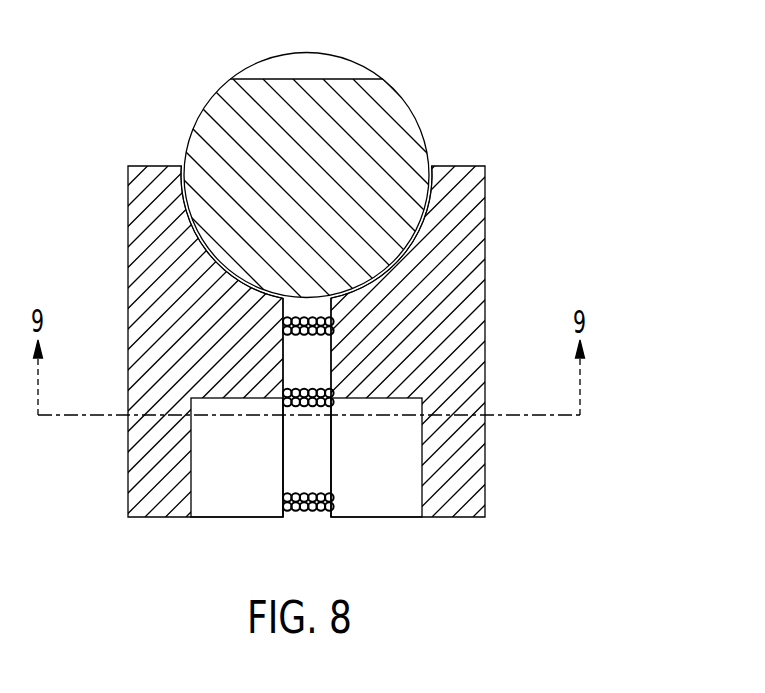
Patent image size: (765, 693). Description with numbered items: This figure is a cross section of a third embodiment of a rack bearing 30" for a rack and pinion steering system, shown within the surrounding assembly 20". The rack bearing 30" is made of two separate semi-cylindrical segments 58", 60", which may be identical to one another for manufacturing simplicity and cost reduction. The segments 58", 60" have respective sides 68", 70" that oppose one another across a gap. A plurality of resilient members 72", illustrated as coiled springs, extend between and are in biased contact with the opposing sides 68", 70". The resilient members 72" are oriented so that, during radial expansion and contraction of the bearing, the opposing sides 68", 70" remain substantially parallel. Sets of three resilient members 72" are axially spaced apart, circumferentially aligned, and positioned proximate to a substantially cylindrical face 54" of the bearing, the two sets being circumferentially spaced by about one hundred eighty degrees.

The ball joint assembly 20 is at (621, 92).
The rack bearing 30 is at (537, 276).
The semi-cylindrical segment 60 is at (497, 204).
The semi-cylindrical segment 58 is at (119, 261).
The substantially cylindrical face 54 is at (128, 455).
The side 68 is at (283, 450).
The side 70 is at (331, 479).
The resilient members 72 is at (310, 513).